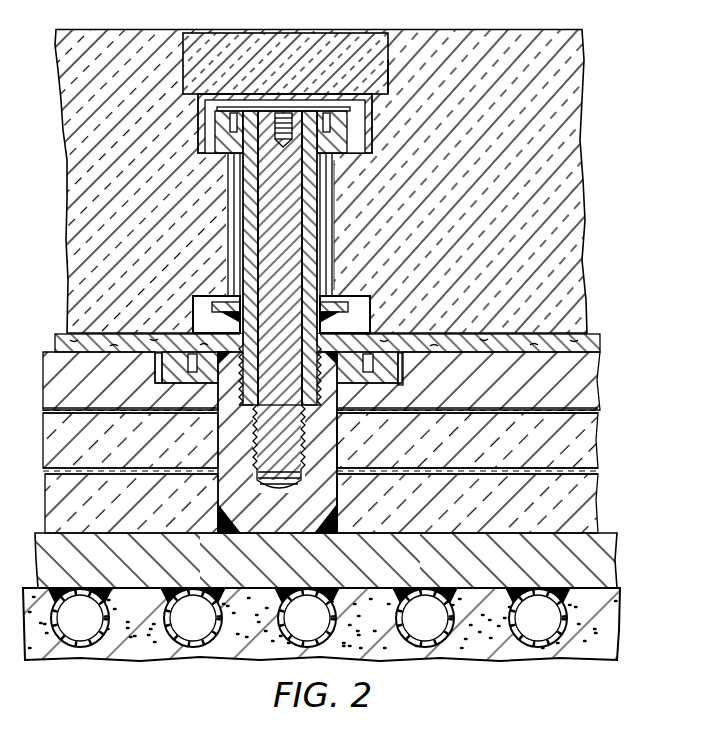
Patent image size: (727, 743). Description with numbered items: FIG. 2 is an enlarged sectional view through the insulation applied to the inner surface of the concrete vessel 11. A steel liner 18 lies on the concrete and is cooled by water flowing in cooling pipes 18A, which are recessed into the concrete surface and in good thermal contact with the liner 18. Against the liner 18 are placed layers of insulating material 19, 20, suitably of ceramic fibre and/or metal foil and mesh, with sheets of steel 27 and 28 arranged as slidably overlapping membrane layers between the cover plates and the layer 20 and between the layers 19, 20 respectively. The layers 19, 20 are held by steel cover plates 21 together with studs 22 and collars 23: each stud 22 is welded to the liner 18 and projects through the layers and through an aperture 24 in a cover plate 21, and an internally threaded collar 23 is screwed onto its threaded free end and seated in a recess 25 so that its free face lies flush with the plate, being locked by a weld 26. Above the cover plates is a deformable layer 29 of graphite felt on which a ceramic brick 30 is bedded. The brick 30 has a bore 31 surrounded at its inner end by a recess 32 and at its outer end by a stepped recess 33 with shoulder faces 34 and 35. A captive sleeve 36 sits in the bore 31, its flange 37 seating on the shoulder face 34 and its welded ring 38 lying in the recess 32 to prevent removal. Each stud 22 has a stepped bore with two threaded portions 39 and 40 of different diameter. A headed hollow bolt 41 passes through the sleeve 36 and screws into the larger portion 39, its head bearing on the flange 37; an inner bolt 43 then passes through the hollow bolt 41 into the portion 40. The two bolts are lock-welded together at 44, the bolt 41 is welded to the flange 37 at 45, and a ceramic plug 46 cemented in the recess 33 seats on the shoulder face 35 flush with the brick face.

The vessel 11 is at (609, 610).
The liner 18 is at (600, 531).
The cooling pipes 18A is at (437, 645).
The layer of insulating material 19 is at (591, 503).
The layer of insulating material 20 is at (590, 447).
The steel cover plate 21 is at (584, 377).
The stud 22 is at (340, 450).
The collar 23 is at (403, 367).
The aperture 24 is at (216, 403).
The recess 25 is at (397, 383).
The weld 26 is at (352, 334).
The sheet of steel 27 is at (593, 411).
The sheet of steel 28 is at (591, 472).
The deformable layer 29 is at (596, 345).
The ceramic brick 30 is at (538, 264).
The bore 31 is at (334, 218).
The recess 32 is at (369, 304).
The stepped recess 33 is at (372, 94).
The shoulder face 34 is at (372, 146).
The shoulder face 35 is at (390, 86).
The sleeve 36 is at (335, 183).
The flange 37 is at (352, 110).
The ring 38 is at (347, 300).
The threaded portion 39 is at (217, 414).
The threaded portion 40 is at (258, 481).
The headed hollow bolt 41 is at (230, 231).
The inner bolt 43 is at (263, 263).
The lock weld 44 is at (171, 247).
The weld 45 is at (221, 110).
The ceramic plug 46 is at (337, 33).